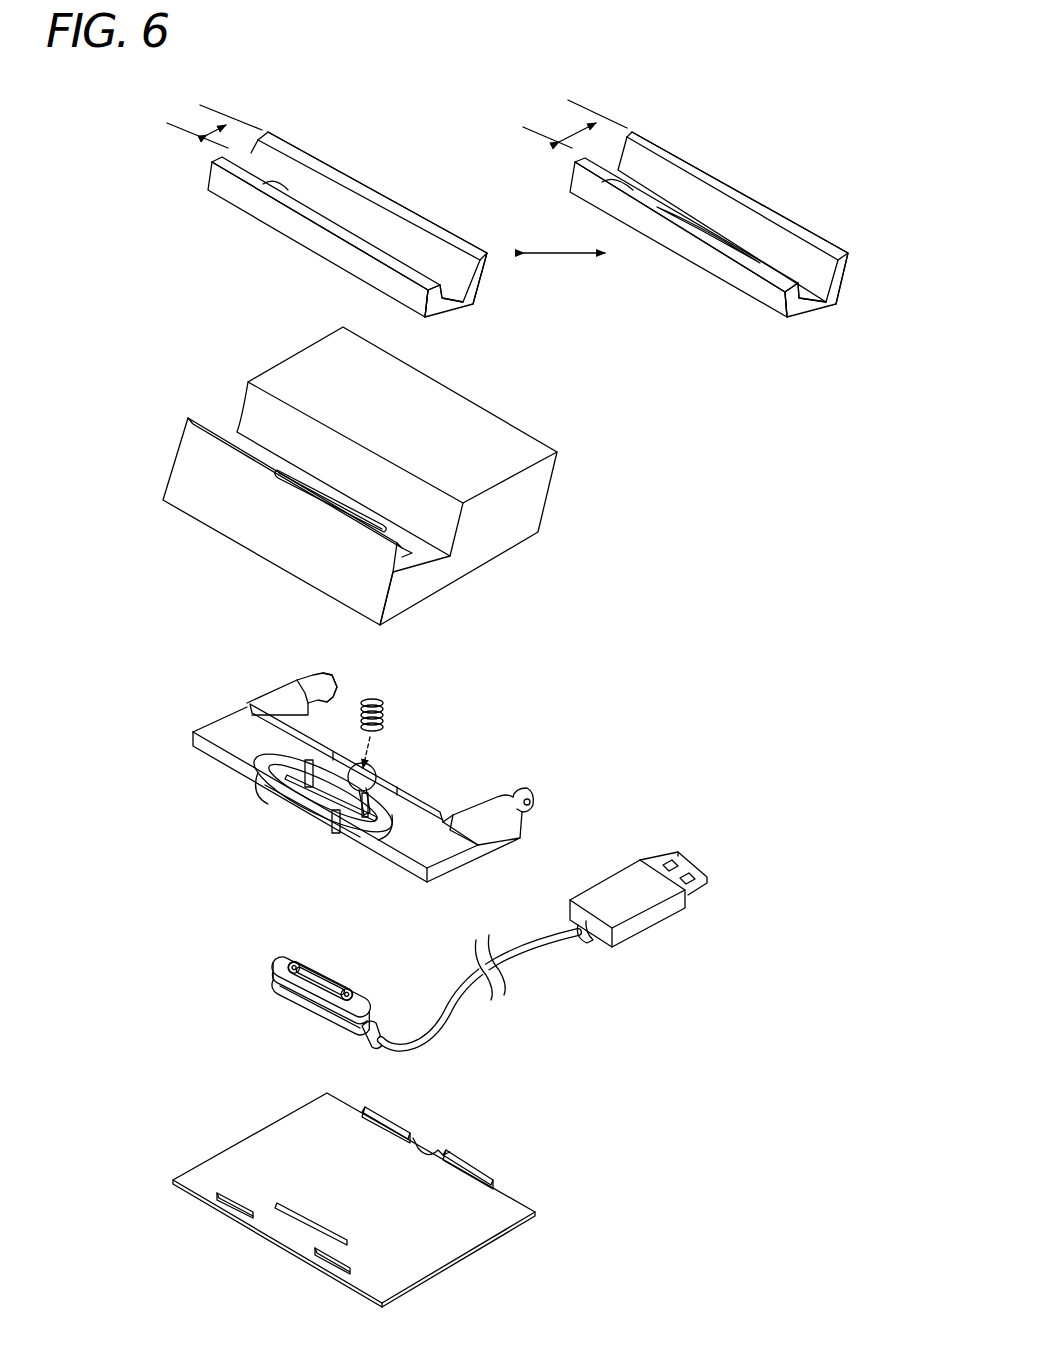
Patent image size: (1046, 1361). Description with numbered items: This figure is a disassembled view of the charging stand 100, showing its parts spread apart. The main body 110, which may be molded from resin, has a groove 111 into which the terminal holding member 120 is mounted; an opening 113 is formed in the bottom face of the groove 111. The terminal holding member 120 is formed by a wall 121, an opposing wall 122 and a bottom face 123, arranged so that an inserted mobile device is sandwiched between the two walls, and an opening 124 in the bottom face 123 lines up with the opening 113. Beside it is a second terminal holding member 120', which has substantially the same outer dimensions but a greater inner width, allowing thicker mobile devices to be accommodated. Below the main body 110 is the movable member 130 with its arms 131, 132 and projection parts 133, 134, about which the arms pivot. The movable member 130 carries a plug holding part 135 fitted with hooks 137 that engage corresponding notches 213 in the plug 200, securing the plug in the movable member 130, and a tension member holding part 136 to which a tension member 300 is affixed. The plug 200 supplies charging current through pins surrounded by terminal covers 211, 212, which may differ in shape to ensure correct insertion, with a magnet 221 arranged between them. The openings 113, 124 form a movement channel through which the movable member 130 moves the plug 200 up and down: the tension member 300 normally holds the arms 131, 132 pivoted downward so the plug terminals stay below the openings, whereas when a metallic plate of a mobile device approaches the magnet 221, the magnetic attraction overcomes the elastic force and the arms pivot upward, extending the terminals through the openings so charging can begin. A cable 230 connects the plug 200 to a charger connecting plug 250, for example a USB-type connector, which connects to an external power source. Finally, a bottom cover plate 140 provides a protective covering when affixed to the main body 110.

The charging stand 100 is at (759, 40).
The main body 110 is at (381, 476).
The groove 111 is at (373, 477).
The opening 113 is at (308, 477).
The terminal holding member 120 is at (367, 224).
The second terminal holding member 120' is at (685, 215).
The wall 121 is at (325, 190).
The wall 122 is at (265, 180).
The bottom face 123 is at (450, 298).
The opening 124 is at (737, 240).
The movable member 130 is at (372, 765).
The arm 131 is at (277, 690).
The arm 132 is at (488, 822).
The projection part 133 is at (328, 673).
The projection part 134 is at (530, 793).
The plug holding part 135 is at (260, 750).
The tension member holding part 136 is at (373, 772).
The hook 137 is at (330, 785).
The bottom cover plate 140 is at (443, 1247).
The plug 200 is at (308, 996).
The terminal cover 211 is at (295, 960).
The terminal cover 212 is at (351, 992).
The notch 213 is at (320, 1012).
The magnet 221 is at (327, 982).
The cable 230 is at (453, 1003).
The charger connecting plug 250 is at (657, 930).
The tension member 300 is at (387, 710).